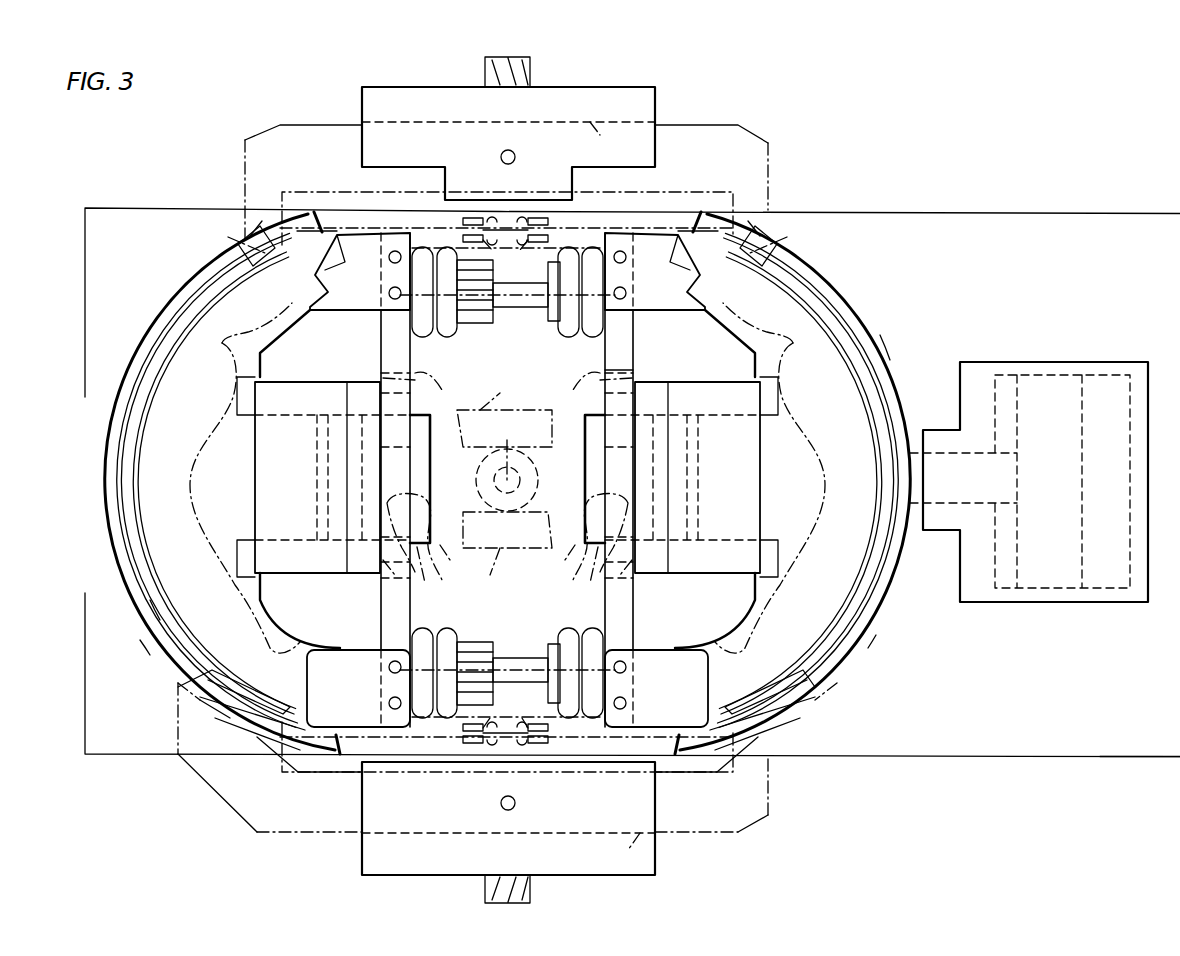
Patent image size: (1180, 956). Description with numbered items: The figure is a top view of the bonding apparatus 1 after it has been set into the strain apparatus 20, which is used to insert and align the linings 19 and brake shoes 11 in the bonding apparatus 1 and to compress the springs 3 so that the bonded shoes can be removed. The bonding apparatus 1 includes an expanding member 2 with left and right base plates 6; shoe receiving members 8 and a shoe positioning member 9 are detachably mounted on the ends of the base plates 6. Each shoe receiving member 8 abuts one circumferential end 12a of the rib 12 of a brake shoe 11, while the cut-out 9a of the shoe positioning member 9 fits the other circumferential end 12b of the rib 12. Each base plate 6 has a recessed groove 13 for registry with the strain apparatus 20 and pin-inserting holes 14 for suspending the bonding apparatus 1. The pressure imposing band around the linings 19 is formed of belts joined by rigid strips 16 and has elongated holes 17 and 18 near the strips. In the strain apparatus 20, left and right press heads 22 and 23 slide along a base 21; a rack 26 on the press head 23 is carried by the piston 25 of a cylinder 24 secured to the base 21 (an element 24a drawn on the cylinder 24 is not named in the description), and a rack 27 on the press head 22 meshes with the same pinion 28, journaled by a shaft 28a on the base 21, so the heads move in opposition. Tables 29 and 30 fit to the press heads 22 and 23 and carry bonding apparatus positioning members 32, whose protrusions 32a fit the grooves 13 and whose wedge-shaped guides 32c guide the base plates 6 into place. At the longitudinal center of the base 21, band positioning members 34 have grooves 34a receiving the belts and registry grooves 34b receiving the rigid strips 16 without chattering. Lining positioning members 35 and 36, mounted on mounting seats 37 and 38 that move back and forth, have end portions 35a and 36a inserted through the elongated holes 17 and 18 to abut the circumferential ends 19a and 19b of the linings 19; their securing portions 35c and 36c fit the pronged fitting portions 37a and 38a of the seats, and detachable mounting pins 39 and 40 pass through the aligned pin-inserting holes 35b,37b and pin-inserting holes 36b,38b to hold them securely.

The bonding apparatus 1 is at (879, 340).
The expanding member 2 is at (638, 373).
The springs 3 is at (553, 337).
The base plates 6 is at (413, 376).
The shoe receiving member 8 is at (352, 652).
The shoe positioning member 9 is at (352, 311).
The cut-out 9a is at (323, 285).
The brake shoe 11 is at (120, 503).
The rib 12 is at (186, 508).
The circumferential end of rib 12a is at (326, 674).
The circumferential end of rib 12b is at (322, 290).
The recessed groove 13 is at (430, 492).
The pin-inserting holes 14 is at (650, 598).
The rigid strips 16 is at (510, 217).
The elongated hole 17 is at (262, 238).
The elongated hole 18 is at (235, 746).
The linings 19 is at (158, 619).
The circumferential end of lining 19a is at (230, 237).
The circumferential end of lining 19b is at (178, 683).
The strain apparatus 20 is at (866, 210).
The base 21 is at (1115, 757).
The left press head 22 is at (312, 385).
The right press head 23 is at (712, 385).
The cylinder 24 is at (1070, 362).
The housing inner 24a is at (1108, 378).
The piston 25 is at (1000, 598).
The rack 26 is at (491, 574).
The rack 27 is at (498, 399).
The pinion 28 is at (536, 485).
The shaft 28a is at (504, 479).
The table 29 is at (149, 636).
The table 30 is at (882, 633).
The bonding apparatus positioning member 32 is at (432, 440).
The protrusion 32a is at (507, 574).
The wedge-shaped guide 32c is at (507, 563).
The band positioning members 34 is at (465, 218).
The grooves 34a is at (533, 242).
The registry grooves 34b is at (492, 222).
The lining positioning member 35 is at (302, 124).
The end portion 35a is at (266, 264).
The pin-inserting holes 35b,37b is at (510, 150).
The securing portion 35c is at (592, 124).
The lining positioning member 36 is at (292, 834).
The end portion 36a is at (215, 690).
The pin-inserting holes 36b,38b is at (511, 810).
The securing portion 36c is at (634, 858).
The mounting seat 37 is at (655, 100).
The pronged fitting portion 37a is at (685, 128).
The mounting seat 38 is at (382, 868).
The pronged fitting portion 38a is at (660, 833).
The mounting pin 39 is at (502, 155).
The mounting pin 40 is at (504, 810).